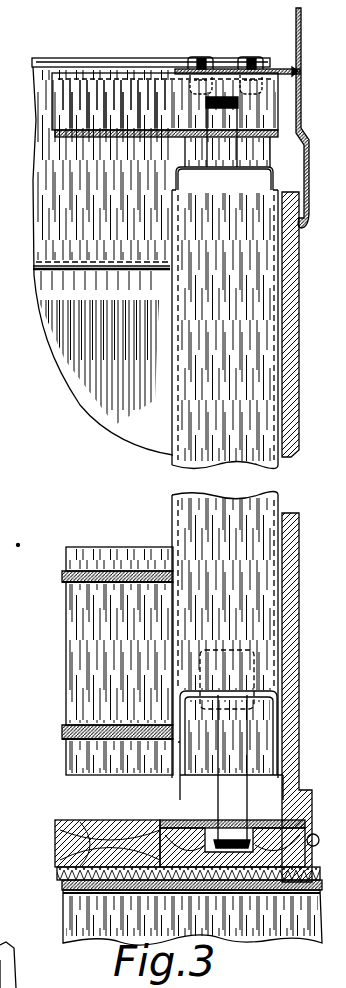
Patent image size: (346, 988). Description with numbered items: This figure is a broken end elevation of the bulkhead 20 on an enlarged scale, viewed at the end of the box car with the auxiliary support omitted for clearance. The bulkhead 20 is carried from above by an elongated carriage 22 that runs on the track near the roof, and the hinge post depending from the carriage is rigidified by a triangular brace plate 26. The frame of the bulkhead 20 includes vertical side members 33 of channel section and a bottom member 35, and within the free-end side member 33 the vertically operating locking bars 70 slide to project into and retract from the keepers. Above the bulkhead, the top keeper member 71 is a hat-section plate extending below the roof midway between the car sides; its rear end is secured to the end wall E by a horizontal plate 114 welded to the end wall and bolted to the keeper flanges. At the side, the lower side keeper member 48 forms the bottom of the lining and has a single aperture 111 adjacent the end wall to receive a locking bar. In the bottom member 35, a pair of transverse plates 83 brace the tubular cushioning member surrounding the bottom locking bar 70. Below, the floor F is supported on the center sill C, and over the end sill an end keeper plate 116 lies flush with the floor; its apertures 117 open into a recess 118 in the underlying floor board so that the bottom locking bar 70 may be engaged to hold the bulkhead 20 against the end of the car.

The end wall E is at (296, 21).
The horizontal plate 114 is at (228, 68).
The top keeper member 71 is at (142, 106).
The locking bar 70 is at (216, 151).
The carriage 22 is at (60, 196).
The bulkhead 20 is at (170, 330).
The triangular brace plate 26 is at (80, 364).
The vertical side member 33 is at (197, 447).
The lower side keeper member 48 is at (143, 632).
The apertures 111 is at (243, 652).
The transverse plates 83 is at (247, 747).
The bottom member 35 is at (181, 742).
The end keeper plate 116 is at (163, 826).
The recess 118 is at (211, 838).
The apertures 117 is at (252, 823).
The floor F is at (73, 826).
The center sill C is at (66, 908).